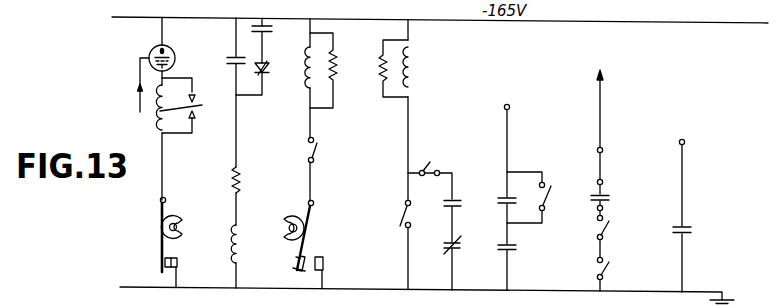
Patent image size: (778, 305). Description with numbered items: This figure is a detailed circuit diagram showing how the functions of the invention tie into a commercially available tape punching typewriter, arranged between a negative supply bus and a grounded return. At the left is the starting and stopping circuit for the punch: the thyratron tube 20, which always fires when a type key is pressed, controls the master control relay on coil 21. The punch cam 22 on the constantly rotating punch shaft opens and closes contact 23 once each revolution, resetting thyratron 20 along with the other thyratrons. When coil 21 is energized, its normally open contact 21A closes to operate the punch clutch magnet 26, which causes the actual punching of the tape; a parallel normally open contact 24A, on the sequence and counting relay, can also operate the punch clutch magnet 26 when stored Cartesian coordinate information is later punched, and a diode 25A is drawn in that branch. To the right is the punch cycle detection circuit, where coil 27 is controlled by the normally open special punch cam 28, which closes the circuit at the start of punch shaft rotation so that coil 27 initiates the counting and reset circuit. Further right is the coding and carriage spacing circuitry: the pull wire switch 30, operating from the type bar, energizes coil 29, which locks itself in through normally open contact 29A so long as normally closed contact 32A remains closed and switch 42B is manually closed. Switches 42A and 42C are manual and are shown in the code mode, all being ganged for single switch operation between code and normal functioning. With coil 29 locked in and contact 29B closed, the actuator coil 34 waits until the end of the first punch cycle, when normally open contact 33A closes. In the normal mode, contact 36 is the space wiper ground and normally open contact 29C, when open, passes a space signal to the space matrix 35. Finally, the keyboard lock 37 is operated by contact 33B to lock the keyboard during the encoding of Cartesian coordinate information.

The thyratron tube 20 is at (171, 45).
The master control relay coil 21 is at (188, 105).
The normally open contact 21A is at (235, 56).
The punch cam 22 is at (178, 213).
The contact 23 is at (178, 260).
The normally open contact 24A is at (264, 28).
The diode 25A is at (265, 66).
The punch clutch magnet 26 is at (238, 240).
The coil 27 is at (304, 70).
The special punch cam 28 is at (300, 214).
The spacing coil 29 is at (410, 77).
The normally open contact 29A is at (445, 207).
The contact 29B is at (511, 250).
The normally open contact 29C is at (605, 196).
The pull wire switch 30 is at (404, 212).
The normally closed contact 32A is at (455, 240).
The normally open contact 33A is at (503, 195).
The contact 33B is at (686, 228).
The actuator coil 34 is at (504, 98).
The space matrix 35 is at (597, 67).
The contact 36 is at (609, 272).
The keyboard lock 37 is at (681, 134).
The manual switch 42A is at (315, 154).
The manual switch 42B is at (442, 153).
The manual switch 42C is at (549, 196).